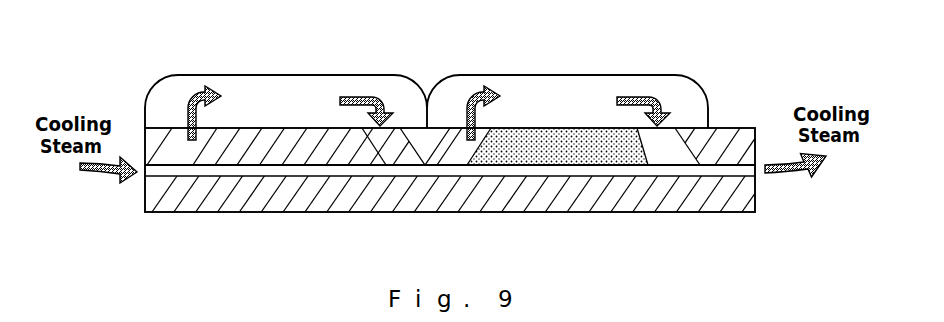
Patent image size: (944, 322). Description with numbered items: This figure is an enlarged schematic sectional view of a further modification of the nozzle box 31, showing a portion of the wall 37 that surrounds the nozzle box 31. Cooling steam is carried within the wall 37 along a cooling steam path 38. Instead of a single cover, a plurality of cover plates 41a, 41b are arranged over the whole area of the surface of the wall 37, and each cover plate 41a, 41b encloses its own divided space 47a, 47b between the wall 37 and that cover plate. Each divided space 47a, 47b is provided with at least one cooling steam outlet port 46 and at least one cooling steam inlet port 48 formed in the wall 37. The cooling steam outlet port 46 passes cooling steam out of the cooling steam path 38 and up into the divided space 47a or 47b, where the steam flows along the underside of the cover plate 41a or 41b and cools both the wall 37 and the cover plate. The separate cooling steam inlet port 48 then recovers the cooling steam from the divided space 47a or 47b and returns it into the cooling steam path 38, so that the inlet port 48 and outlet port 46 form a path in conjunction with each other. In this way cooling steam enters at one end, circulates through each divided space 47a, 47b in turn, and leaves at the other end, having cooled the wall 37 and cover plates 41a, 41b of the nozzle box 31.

The nozzle box 31 is at (779, 212).
The wall 37 is at (338, 143).
The cooling steam path 38 is at (238, 170).
The cover plate 41a is at (287, 75).
The cover plate 41b is at (567, 75).
The cooling steam outlet port 46 is at (178, 153).
The divided space 47a is at (302, 118).
The divided space 47b is at (582, 118).
The cooling steam inlet port 48 is at (397, 153).